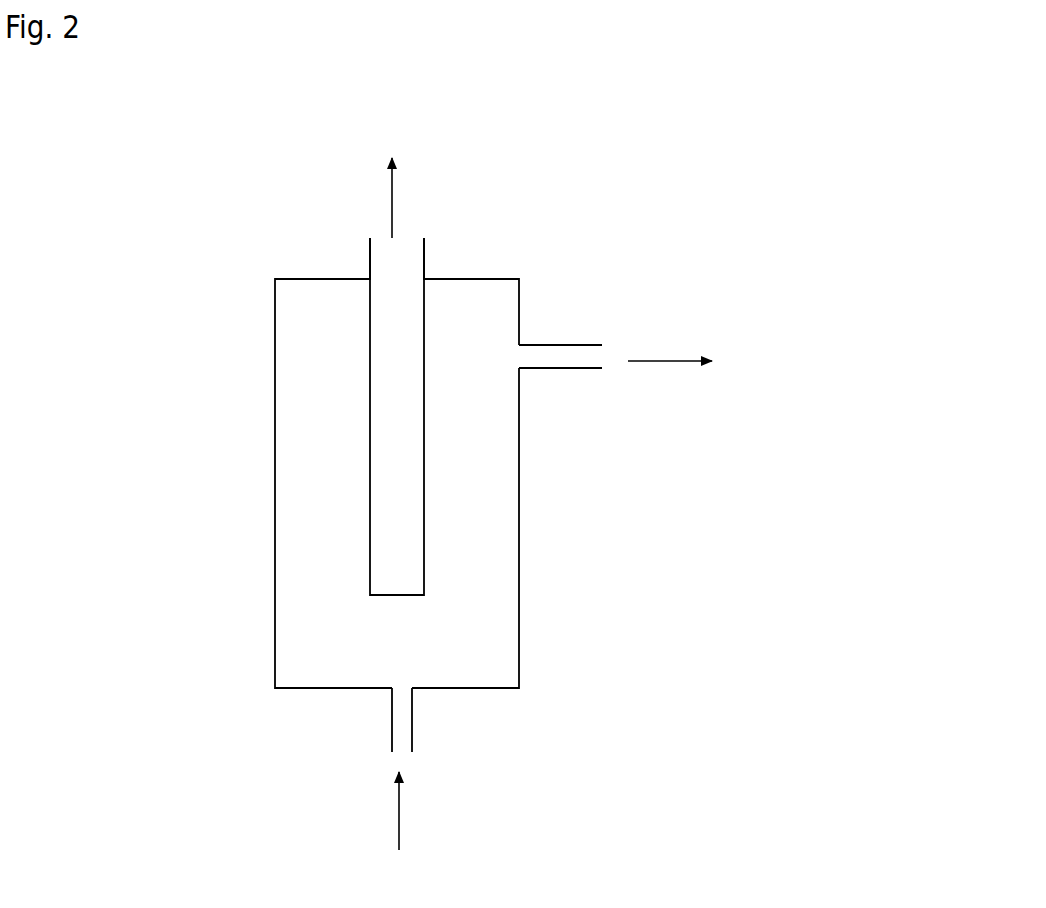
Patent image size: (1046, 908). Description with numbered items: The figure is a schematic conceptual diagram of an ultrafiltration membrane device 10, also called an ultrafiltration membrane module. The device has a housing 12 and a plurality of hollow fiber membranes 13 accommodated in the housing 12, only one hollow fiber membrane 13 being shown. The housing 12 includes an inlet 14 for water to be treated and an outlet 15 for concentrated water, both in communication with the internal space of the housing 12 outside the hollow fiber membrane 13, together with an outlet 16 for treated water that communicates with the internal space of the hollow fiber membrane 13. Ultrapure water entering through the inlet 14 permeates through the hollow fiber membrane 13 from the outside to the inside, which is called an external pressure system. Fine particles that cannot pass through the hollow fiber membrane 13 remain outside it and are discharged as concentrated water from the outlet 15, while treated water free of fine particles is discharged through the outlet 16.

The ultrafiltration membrane device 10 is at (488, 126).
The housing 12 is at (275, 352).
The hollow fiber membrane 13 is at (372, 359).
The inlet for water to be treated 14 is at (395, 725).
The outlet for concentrated water 15 is at (571, 369).
The outlet for treated water 16 is at (383, 252).